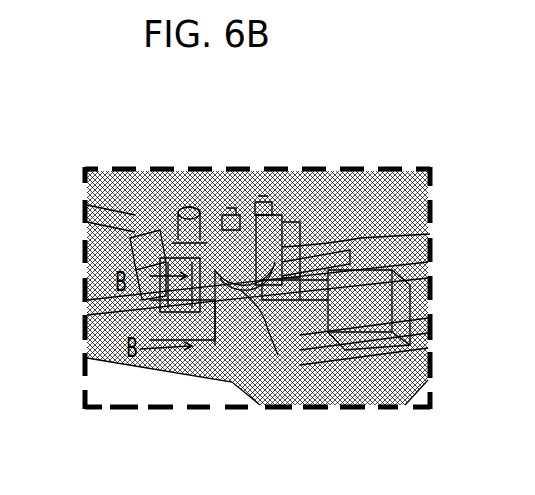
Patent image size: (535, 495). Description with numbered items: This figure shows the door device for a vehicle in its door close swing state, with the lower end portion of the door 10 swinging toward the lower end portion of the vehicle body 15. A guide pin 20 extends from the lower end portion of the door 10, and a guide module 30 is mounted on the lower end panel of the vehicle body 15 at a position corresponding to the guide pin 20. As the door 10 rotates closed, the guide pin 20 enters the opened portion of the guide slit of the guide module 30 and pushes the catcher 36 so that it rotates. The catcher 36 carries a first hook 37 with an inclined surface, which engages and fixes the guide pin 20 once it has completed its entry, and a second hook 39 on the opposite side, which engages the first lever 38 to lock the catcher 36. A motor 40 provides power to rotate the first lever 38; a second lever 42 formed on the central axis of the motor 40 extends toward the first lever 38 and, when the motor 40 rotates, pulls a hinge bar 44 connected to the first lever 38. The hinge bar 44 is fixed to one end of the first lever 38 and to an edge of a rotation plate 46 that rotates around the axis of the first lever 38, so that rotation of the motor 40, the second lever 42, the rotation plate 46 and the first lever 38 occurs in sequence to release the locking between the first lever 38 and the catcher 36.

The door 10 is at (108, 358).
The vehicle body 15 is at (418, 385).
The guide pin 20 is at (185, 206).
The guide module 30 is at (318, 295).
The catcher 36 is at (130, 248).
The first hook 37 is at (163, 350).
The first lever 38 is at (281, 196).
The second hook 39 is at (232, 208).
The motor 40 is at (282, 213).
The second lever 42 is at (430, 234).
The hinge bar 44 is at (230, 290).
The rotation plate 46 is at (250, 300).